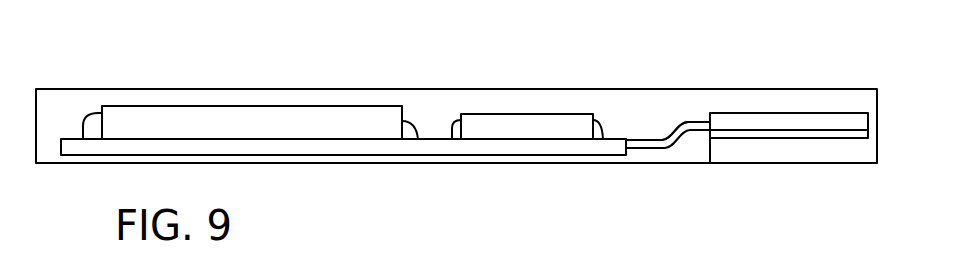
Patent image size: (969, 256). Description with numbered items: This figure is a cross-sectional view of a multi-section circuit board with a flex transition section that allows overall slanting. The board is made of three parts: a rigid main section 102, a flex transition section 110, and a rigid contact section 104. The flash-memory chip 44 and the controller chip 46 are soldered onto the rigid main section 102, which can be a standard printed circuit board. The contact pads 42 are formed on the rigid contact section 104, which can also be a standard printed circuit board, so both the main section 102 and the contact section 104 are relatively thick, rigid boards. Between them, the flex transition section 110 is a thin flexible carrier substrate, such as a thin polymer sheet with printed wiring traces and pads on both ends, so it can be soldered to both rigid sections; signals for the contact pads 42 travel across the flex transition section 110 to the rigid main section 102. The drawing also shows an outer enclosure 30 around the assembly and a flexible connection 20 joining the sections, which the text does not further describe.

The housing 30 is at (119, 90).
The flash-memory chip 44 is at (278, 114).
The controller chip 46 is at (538, 116).
The flex transition section 110 is at (685, 120).
The rigid contact section 104 is at (793, 122).
The rigid main section 102 is at (333, 148).
The flexible circuit 20 is at (669, 157).
The contact pads 42 is at (792, 138).